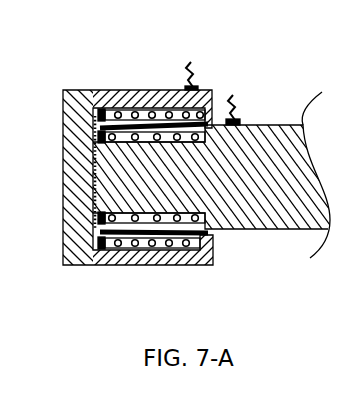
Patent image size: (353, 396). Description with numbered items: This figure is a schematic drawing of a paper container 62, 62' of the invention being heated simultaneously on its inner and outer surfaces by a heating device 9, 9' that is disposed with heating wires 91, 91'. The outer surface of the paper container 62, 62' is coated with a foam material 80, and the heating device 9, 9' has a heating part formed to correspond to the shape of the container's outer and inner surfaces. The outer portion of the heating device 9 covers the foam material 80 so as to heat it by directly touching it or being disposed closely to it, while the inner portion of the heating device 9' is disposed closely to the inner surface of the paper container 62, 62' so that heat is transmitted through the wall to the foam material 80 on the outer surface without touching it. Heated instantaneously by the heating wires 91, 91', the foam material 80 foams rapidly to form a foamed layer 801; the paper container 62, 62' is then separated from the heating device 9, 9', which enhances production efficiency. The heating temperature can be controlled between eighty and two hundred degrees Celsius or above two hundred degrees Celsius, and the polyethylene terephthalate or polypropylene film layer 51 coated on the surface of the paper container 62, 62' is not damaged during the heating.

The heating device 9 is at (118, 180).
The heating device 9' is at (215, 166).
The polyethylene terephthalate or polypropylene film layer 51 is at (64, 173).
The paper container 62 is at (181, 82).
The paper container 62' is at (233, 110).
The foam material 80 is at (155, 153).
The foamed layer 801 is at (156, 179).
The heating wires 91 is at (152, 152).
The heating wires 91' is at (78, 186).